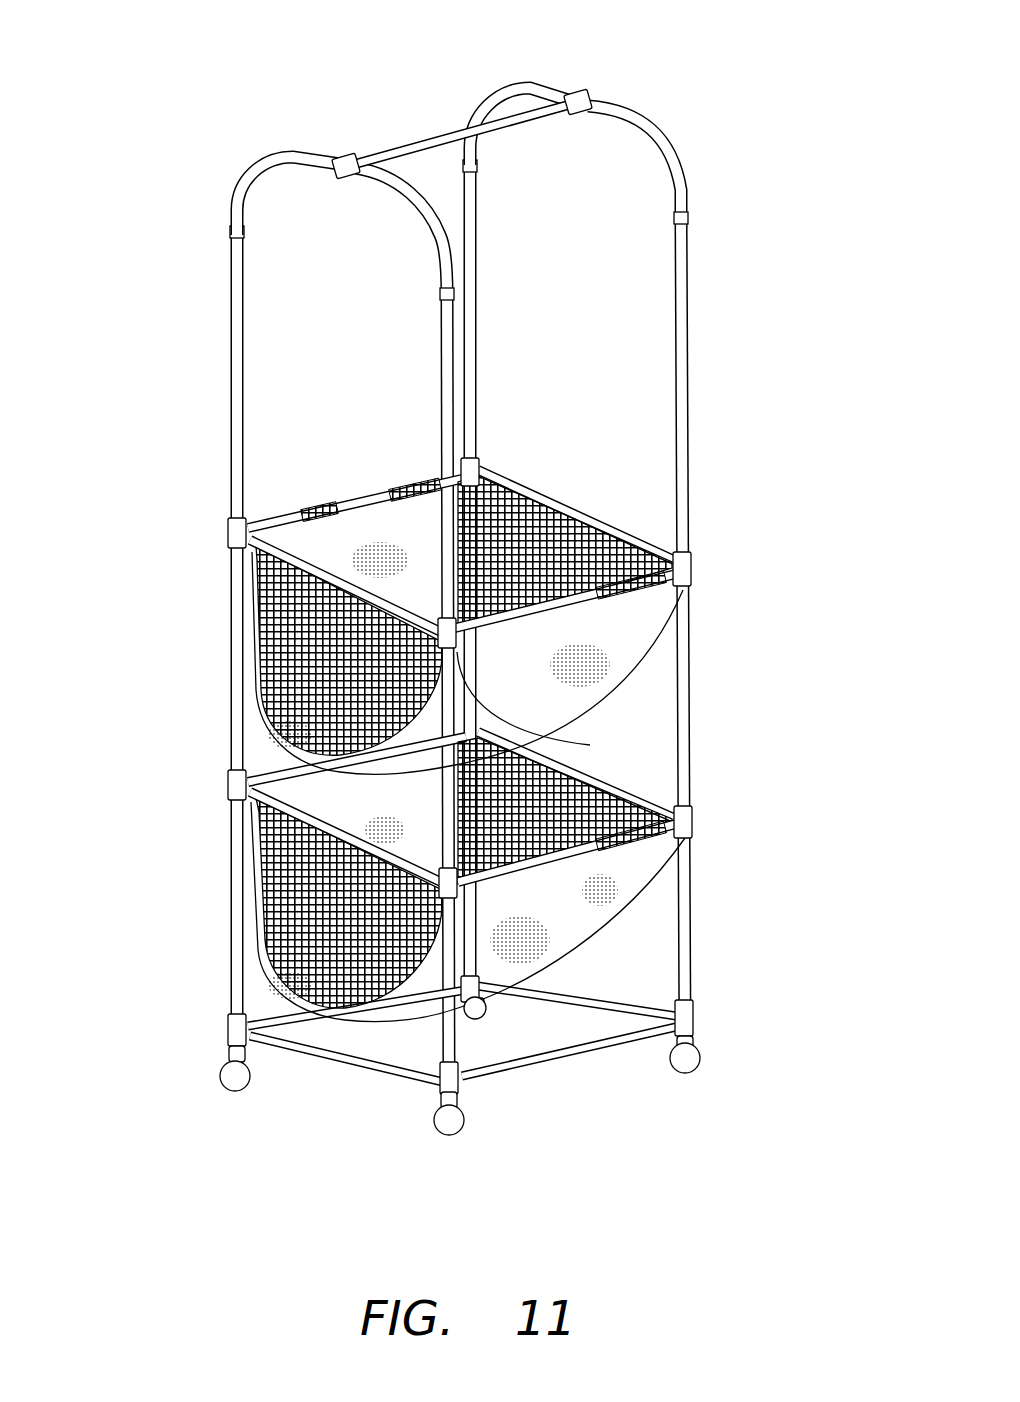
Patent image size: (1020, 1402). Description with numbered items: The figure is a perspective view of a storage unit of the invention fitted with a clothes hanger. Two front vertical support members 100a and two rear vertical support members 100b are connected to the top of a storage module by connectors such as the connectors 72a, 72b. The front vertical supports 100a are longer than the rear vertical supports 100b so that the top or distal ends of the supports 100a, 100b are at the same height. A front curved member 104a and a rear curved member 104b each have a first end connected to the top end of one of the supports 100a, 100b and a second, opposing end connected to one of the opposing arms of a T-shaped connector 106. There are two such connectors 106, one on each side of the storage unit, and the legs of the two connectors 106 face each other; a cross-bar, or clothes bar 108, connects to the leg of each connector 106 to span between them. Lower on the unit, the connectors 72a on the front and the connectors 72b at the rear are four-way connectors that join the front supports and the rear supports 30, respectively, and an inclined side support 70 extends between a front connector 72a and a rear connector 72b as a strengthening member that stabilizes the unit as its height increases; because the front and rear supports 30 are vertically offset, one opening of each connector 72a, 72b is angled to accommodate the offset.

The rear support 30 is at (466, 567).
The inclined side support 70 is at (292, 565).
The connector 72a is at (690, 564).
The connector 72b is at (490, 468).
The front vertical support member 100a is at (685, 300).
The rear vertical support member 100b is at (471, 234).
The front curved member 104a is at (668, 141).
The rear curved member 104b is at (492, 96).
The T-shaped connector 106 is at (577, 98).
The clothes bar 108 is at (437, 138).